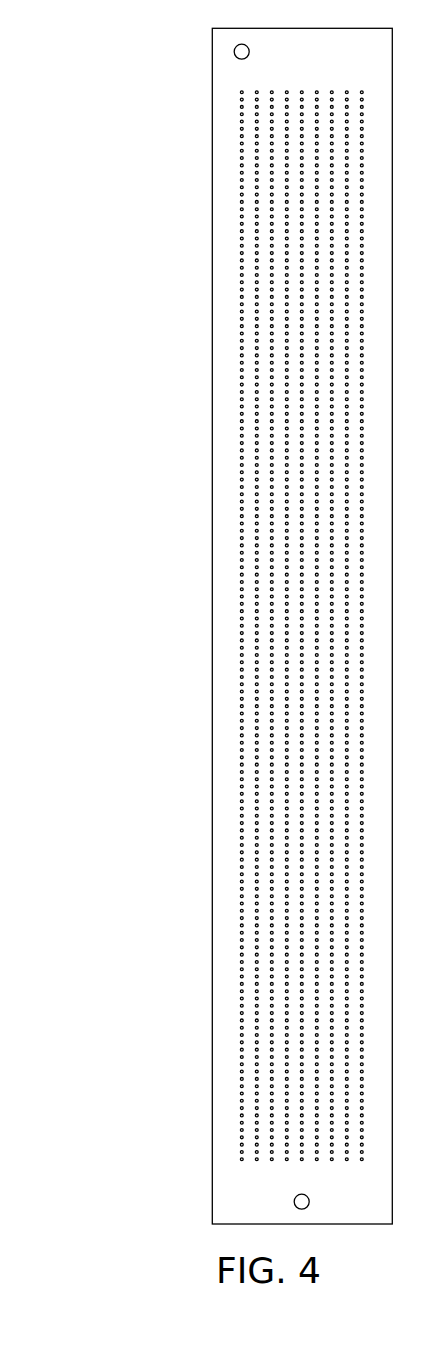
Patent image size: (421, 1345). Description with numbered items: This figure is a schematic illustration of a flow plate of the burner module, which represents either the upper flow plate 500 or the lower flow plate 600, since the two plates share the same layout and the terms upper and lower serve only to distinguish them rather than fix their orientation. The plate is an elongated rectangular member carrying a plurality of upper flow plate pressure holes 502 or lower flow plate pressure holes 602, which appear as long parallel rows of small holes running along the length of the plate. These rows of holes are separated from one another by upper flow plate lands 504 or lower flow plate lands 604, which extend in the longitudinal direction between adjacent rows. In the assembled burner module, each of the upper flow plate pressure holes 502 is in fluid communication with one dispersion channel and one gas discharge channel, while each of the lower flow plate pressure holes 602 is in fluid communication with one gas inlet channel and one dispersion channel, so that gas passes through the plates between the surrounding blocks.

The upper flow plate 500 is at (207, 626).
The lower flow plate 600 is at (180, 177).
The upper flow plate pressure holes 502 is at (226, 344).
The lower flow plate pressure holes 602 is at (273, 372).
The upper flow plate lands 504 is at (229, 881).
The lower flow plate lands 604 is at (277, 757).